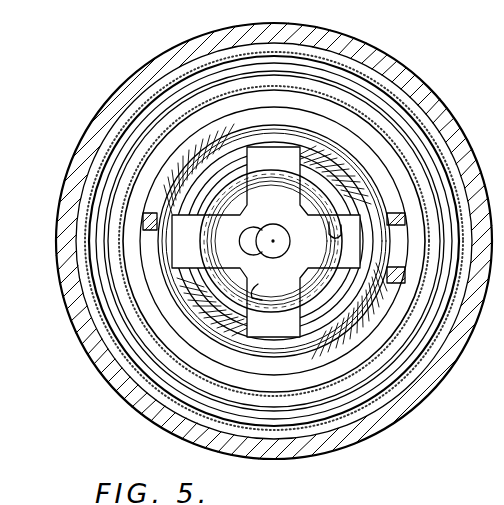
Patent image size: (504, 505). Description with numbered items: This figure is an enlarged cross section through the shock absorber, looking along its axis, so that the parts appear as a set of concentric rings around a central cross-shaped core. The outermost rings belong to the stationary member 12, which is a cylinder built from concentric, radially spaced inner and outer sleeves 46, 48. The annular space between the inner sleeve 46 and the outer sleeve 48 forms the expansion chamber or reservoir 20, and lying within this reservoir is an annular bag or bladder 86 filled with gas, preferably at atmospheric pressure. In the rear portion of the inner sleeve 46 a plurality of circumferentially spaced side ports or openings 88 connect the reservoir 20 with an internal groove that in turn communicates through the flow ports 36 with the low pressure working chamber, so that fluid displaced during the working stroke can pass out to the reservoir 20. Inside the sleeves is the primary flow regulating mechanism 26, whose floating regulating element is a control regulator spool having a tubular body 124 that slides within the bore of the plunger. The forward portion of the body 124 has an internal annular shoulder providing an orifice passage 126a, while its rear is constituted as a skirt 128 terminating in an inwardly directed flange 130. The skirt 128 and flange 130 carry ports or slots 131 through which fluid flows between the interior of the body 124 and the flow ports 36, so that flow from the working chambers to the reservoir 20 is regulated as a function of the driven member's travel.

The stationary member 12 is at (449, 493).
The expansion chamber or reservoir 20 is at (125, 355).
The primary flow regulating mechanism 26 is at (220, 190).
The flow ports 36 is at (280, 148).
The inner sleeve 46 is at (170, 314).
The outer sleeve 48 is at (392, 63).
The annular bag or bladder 86 is at (409, 355).
The side ports or openings 88 is at (150, 217).
The tubular body 124 is at (312, 178).
The orifice passage 126a is at (147, 409).
The skirt 128 is at (281, 312).
The inwardly directed flange 130 is at (210, 207).
The ports or slots 131 is at (337, 233).